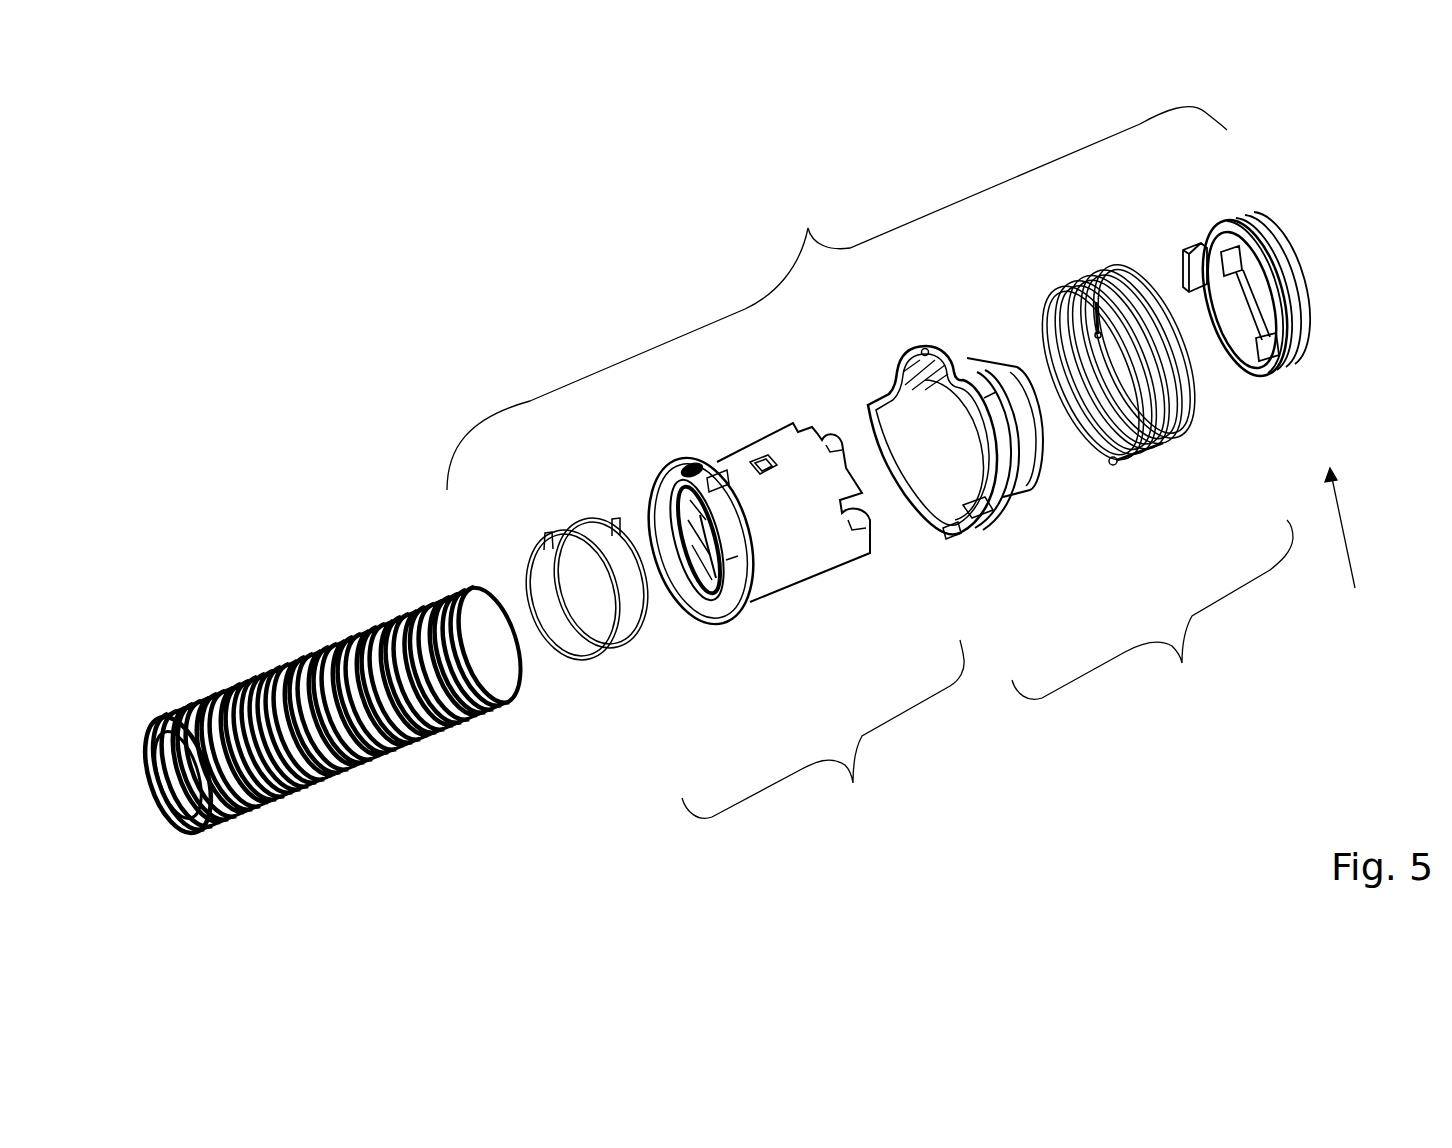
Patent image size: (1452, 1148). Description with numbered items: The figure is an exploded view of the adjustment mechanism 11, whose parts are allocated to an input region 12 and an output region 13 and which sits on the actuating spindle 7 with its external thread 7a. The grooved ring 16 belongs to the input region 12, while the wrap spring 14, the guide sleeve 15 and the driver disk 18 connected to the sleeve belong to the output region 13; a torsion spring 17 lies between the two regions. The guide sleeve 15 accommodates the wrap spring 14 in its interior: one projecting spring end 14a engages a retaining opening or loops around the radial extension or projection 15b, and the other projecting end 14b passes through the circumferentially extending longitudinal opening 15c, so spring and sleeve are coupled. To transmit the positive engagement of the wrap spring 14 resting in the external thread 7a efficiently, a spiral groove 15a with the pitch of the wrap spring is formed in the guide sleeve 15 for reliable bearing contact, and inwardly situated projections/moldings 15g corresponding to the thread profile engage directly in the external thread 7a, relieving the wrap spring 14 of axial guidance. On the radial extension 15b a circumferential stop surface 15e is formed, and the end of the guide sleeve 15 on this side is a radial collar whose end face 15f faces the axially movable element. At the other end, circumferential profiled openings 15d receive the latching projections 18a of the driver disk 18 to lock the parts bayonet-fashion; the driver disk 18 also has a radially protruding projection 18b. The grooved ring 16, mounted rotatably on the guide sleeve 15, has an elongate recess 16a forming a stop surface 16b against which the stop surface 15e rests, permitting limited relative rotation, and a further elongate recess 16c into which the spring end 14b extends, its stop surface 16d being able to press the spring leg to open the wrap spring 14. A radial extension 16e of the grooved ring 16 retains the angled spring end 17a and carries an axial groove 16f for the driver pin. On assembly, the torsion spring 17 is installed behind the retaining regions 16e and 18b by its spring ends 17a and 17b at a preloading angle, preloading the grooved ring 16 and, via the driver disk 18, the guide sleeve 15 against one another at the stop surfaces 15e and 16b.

The actuating spindle 7 is at (327, 702).
The external thread 7a is at (263, 667).
The adjustment mechanism 11 is at (915, 463).
The input region 12 is at (1198, 451).
The output region 13 is at (993, 544).
The wrap spring 14 is at (546, 554).
The projecting spring end 14a is at (545, 542).
The projecting end 14b is at (608, 520).
The guide sleeve 15 is at (763, 523).
The spiral groove 15a is at (673, 587).
The radial extension or projection 15b is at (686, 459).
The longitudinal opening 15c is at (760, 441).
The circumferential profiled openings 15d is at (823, 444).
The stop surface 15e is at (730, 556).
The end face 15f is at (656, 489).
The projections/moldings 15g is at (712, 619).
The grooved ring 16 is at (967, 474).
The elongate recess 16a is at (920, 389).
The stop surface 16b is at (925, 350).
The further elongate recess 16c is at (977, 368).
The stop surface 16d is at (990, 394).
The radial extension 16e is at (986, 537).
The axial groove 16f is at (955, 542).
The torsion spring 17 is at (1124, 396).
The angled spring end 17a is at (1120, 468).
The spring end 17b is at (1096, 302).
The driver disk 18 is at (1283, 327).
The latching projections 18a is at (1273, 333).
The radially protruding projection 18b is at (1196, 290).